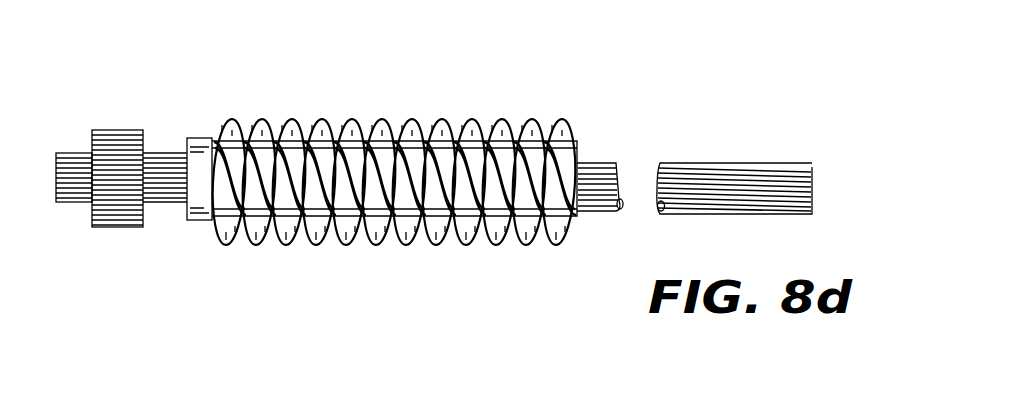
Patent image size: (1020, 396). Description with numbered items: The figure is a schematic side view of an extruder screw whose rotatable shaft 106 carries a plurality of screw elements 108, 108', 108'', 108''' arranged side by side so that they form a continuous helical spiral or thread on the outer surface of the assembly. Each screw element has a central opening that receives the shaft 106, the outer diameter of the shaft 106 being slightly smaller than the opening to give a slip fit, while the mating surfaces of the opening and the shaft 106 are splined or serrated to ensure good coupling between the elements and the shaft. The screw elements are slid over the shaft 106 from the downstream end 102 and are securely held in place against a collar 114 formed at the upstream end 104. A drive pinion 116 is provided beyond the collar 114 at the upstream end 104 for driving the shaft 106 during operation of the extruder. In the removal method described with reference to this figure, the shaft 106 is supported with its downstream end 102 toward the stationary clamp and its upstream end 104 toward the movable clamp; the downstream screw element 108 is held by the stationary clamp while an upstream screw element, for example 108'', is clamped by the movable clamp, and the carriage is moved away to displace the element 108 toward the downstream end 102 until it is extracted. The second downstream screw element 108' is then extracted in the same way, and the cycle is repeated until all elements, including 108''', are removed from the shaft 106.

The downstream end 102 is at (772, 178).
The upstream end 104 is at (72, 165).
The shaft 106 is at (602, 200).
The screw element 108 is at (431, 182).
The second downstream screw element 108' is at (491, 166).
The upstream screw element 108'' is at (354, 164).
The spring coil 108''' is at (266, 159).
The collar 114 is at (195, 142).
The drive pinion 116 is at (122, 137).